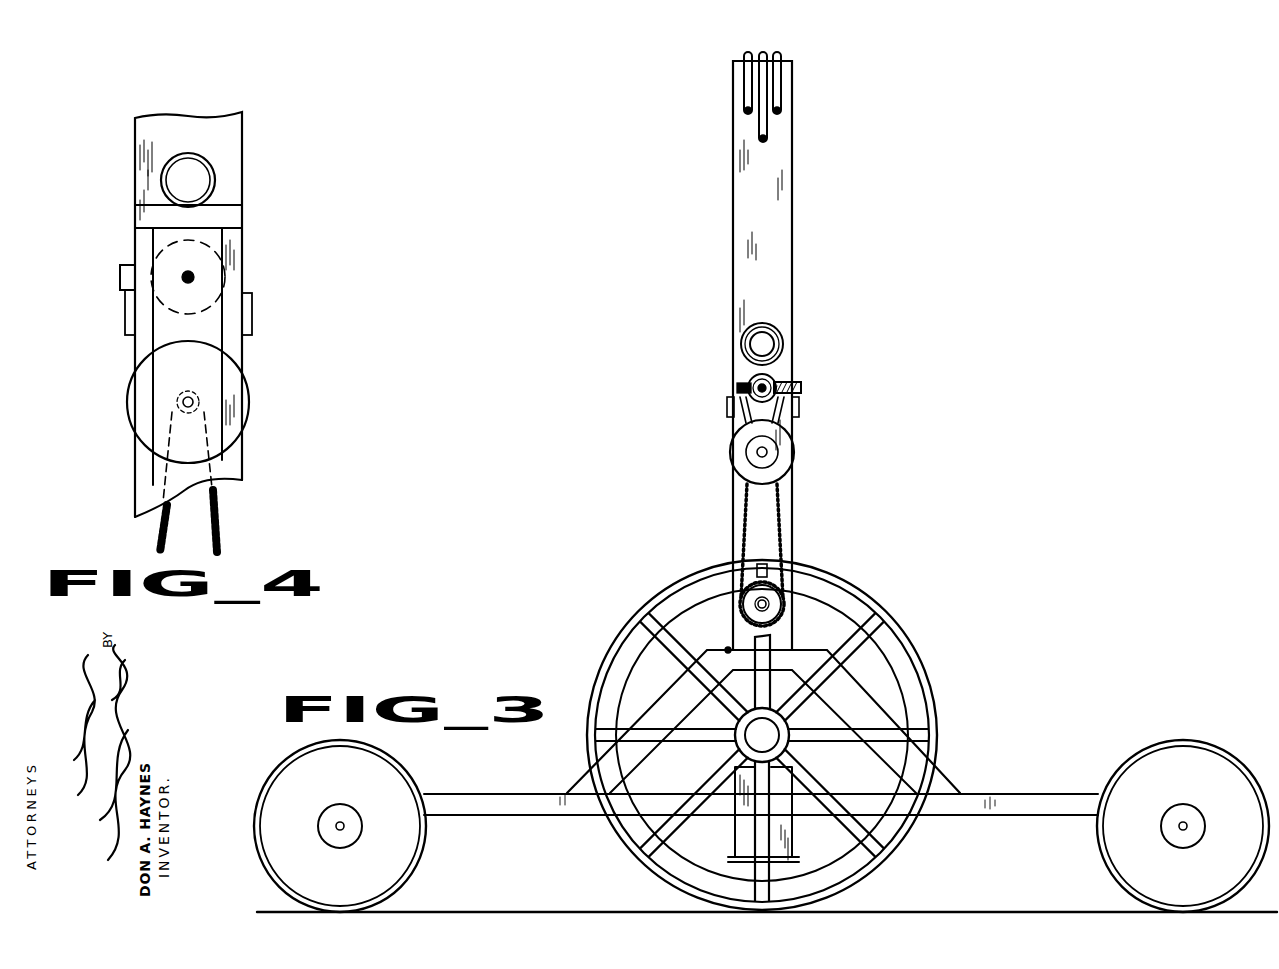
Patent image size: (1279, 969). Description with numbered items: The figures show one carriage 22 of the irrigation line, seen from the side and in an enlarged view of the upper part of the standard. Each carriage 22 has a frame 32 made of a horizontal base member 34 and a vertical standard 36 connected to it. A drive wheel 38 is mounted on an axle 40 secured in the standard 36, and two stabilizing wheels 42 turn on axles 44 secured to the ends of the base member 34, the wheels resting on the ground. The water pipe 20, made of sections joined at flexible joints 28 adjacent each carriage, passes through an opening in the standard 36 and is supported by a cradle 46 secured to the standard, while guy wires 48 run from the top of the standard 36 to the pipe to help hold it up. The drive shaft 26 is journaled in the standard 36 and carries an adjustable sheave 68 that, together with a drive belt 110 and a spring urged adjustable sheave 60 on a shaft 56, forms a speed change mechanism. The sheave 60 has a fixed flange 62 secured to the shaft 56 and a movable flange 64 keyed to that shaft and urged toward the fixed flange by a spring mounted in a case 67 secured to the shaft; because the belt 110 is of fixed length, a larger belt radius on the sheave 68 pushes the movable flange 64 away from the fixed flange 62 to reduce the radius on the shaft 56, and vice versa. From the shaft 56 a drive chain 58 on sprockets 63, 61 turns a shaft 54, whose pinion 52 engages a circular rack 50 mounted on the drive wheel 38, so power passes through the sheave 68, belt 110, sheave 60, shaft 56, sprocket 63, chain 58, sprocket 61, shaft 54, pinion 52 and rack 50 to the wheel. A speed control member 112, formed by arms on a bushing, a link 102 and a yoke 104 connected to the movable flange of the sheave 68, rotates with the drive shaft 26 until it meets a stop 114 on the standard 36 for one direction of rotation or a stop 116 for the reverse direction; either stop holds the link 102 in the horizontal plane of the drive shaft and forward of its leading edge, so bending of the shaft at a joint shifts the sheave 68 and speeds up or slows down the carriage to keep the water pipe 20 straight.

In FIG. 3, the water pipe 20 is at (776, 346).
In FIG. 4, the water pipe 20 is at (212, 169).
In FIG. 3, the carriage 22 is at (880, 272).
In FIG. 3, the drive shaft 26 is at (770, 383).
In FIG. 4, the drive shaft 26 is at (196, 277).
In FIG. 3, the flexible joint 28 is at (752, 330).
In FIG. 3, the frame 32 is at (880, 712).
In FIG. 3, the horizontal base member 34 is at (1005, 793).
In FIG. 3, the vertical standard 36 is at (795, 556).
In FIG. 4, the vertical standard 36 is at (243, 121).
In FIG. 3, the drive wheel 38 is at (905, 638).
In FIG. 3, the axle 40 is at (756, 736).
In FIG. 3, the stabilizing wheel 42 is at (324, 790).
In FIG. 3, the axle 44 is at (345, 829).
In FIG. 4, the cradle 46 is at (235, 216).
In FIG. 3, the guy wire 48 is at (775, 92).
In FIG. 3, the circular rack 50 is at (637, 659).
In FIG. 3, the pinion 52 is at (745, 611).
In FIG. 3, the shaft 54 is at (770, 605).
In FIG. 3, the shaft 56 is at (768, 452).
In FIG. 4, the shaft 56 is at (195, 402).
In FIG. 3, the drive chain 58 is at (782, 520).
In FIG. 4, the drive chain 58 is at (216, 510).
In FIG. 3, the spring urged adjustable sheave 60 is at (737, 481).
In FIG. 4, the spring urged adjustable sheave 60 is at (250, 420).
In FIG. 3, the sprocket 61 is at (780, 577).
In FIG. 4, the fixed flange 62 is at (129, 404).
In FIG. 4, the sprocket 63 is at (170, 421).
In FIG. 3, the movable flange 64 is at (731, 446).
In FIG. 3, the case 67 is at (748, 461).
In FIG. 3, the adjustable sheave 68 is at (744, 380).
In FIG. 4, the adjustable sheave 68 is at (236, 266).
In FIG. 3, the link 102 is at (803, 389).
In FIG. 4, the link 102 is at (120, 278).
In FIG. 3, the yoke 104 is at (738, 387).
In FIG. 4, the yoke 104 is at (118, 266).
In FIG. 3, the drive belt 110 is at (735, 418).
In FIG. 4, the drive belt 110 is at (252, 299).
In FIG. 3, the speed control member 112 is at (806, 385).
In FIG. 4, the speed control member 112 is at (118, 286).
In FIG. 3, the stop 114 is at (797, 404).
In FIG. 4, the stop 114 is at (125, 306).
In FIG. 3, the stop 116 is at (730, 404).
In FIG. 4, the stop 116 is at (252, 320).